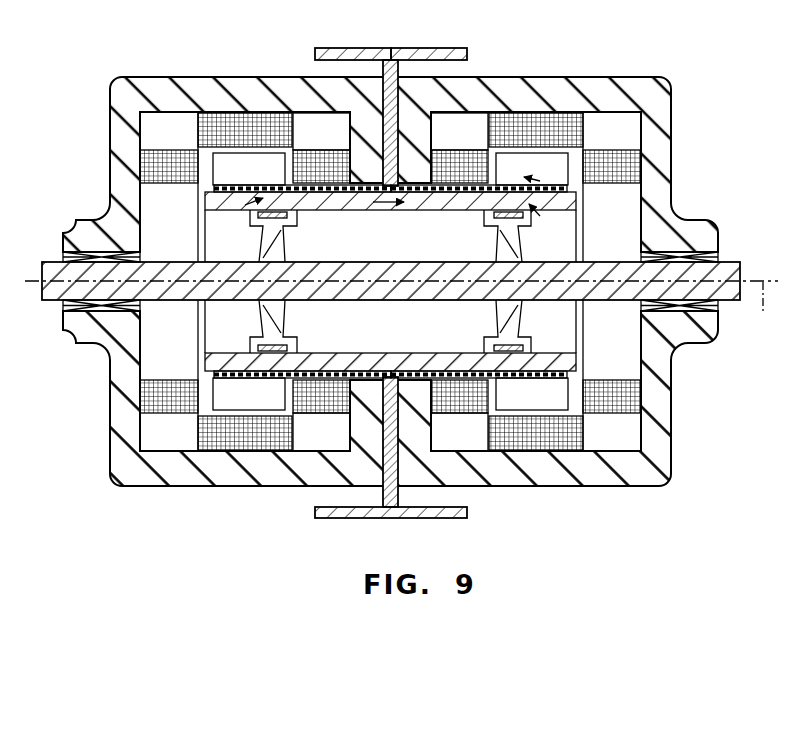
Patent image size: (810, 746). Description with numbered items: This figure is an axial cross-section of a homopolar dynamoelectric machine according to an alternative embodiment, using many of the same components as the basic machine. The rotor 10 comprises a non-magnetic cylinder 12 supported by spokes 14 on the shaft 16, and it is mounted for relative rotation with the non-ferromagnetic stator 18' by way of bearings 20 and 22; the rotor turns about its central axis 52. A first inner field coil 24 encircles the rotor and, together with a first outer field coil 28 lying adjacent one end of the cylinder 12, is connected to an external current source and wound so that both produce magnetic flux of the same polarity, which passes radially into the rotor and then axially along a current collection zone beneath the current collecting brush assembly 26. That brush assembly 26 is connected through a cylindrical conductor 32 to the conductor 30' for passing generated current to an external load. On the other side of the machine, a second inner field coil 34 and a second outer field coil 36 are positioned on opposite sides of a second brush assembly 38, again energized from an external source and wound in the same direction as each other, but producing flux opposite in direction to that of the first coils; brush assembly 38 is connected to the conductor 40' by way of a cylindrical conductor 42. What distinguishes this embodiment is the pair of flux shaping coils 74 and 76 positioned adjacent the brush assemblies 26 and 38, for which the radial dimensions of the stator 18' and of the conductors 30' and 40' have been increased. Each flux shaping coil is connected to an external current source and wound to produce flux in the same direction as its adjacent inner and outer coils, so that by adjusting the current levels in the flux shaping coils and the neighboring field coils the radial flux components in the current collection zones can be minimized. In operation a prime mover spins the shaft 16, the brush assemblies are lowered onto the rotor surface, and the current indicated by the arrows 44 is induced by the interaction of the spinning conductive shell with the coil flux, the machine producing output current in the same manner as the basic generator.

The rotor 10 is at (353, 203).
The non-magnetic cylinder 12 is at (366, 359).
The spokes 14 is at (503, 247).
The shaft 16 is at (431, 293).
The stator 18' is at (389, 281).
The bearing 20 is at (63, 254).
The bearing 22 is at (722, 258).
The first inner field coil 24 is at (443, 153).
The current collecting brush assembly 26 is at (512, 167).
The first outer field coil 28 is at (603, 163).
The conductor 30' is at (391, 268).
The cylindrical conductor 32 is at (468, 187).
The second inner field coil 34 is at (311, 153).
The second outer field coil 36 is at (153, 158).
The second brush assembly 38 is at (227, 163).
The conductor 40' is at (353, 44).
The cylindrical conductor 42 is at (331, 187).
The arrows 44 is at (245, 205).
The central axis 52 is at (763, 312).
The flux shaping coil 74 is at (560, 137).
The flux shaping coil 76 is at (261, 130).